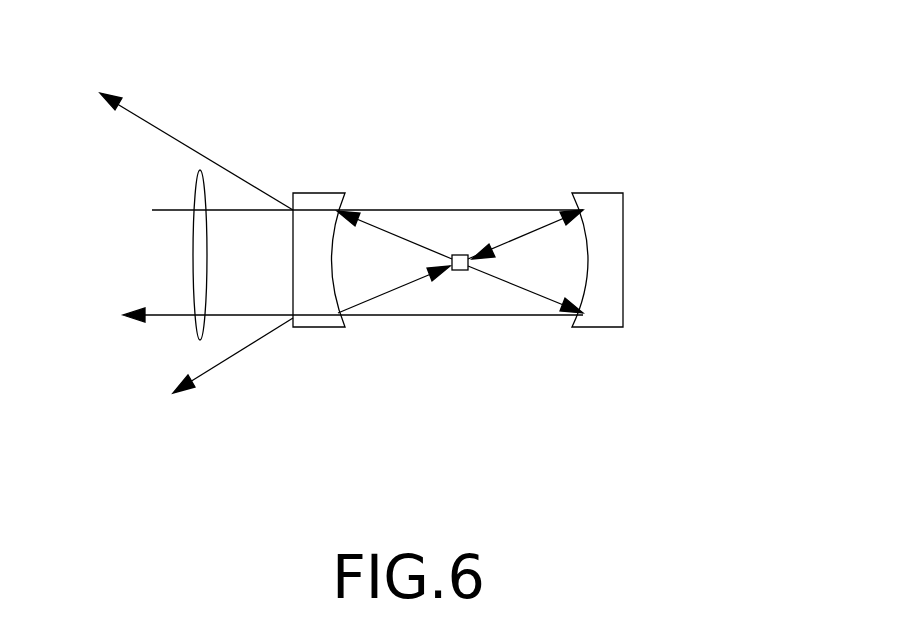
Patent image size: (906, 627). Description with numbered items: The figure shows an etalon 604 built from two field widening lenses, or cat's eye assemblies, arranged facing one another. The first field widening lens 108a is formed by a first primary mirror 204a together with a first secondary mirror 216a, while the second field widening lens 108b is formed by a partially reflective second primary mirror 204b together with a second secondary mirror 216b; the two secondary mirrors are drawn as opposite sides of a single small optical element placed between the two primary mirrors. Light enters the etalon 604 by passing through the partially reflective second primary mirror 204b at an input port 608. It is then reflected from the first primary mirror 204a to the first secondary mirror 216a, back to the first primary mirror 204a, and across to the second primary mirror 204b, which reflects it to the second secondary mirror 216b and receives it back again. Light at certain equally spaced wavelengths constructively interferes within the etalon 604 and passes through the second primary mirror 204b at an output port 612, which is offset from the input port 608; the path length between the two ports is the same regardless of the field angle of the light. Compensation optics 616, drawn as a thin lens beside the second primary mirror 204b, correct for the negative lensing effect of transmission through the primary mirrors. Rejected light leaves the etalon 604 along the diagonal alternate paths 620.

The alternate paths 620 is at (180, 140).
The compensation optics 616 is at (197, 190).
The input port 608 is at (292, 212).
The output port 612 is at (292, 313).
The second primary mirror 204b is at (320, 193).
The first primary mirror 204a is at (623, 260).
The etalon 604 is at (571, 156).
The second secondary mirror 216b is at (458, 255).
The first secondary mirror 216a is at (463, 270).
The first field widening lens 108a is at (566, 354).
The second field widening lens 108b is at (381, 366).